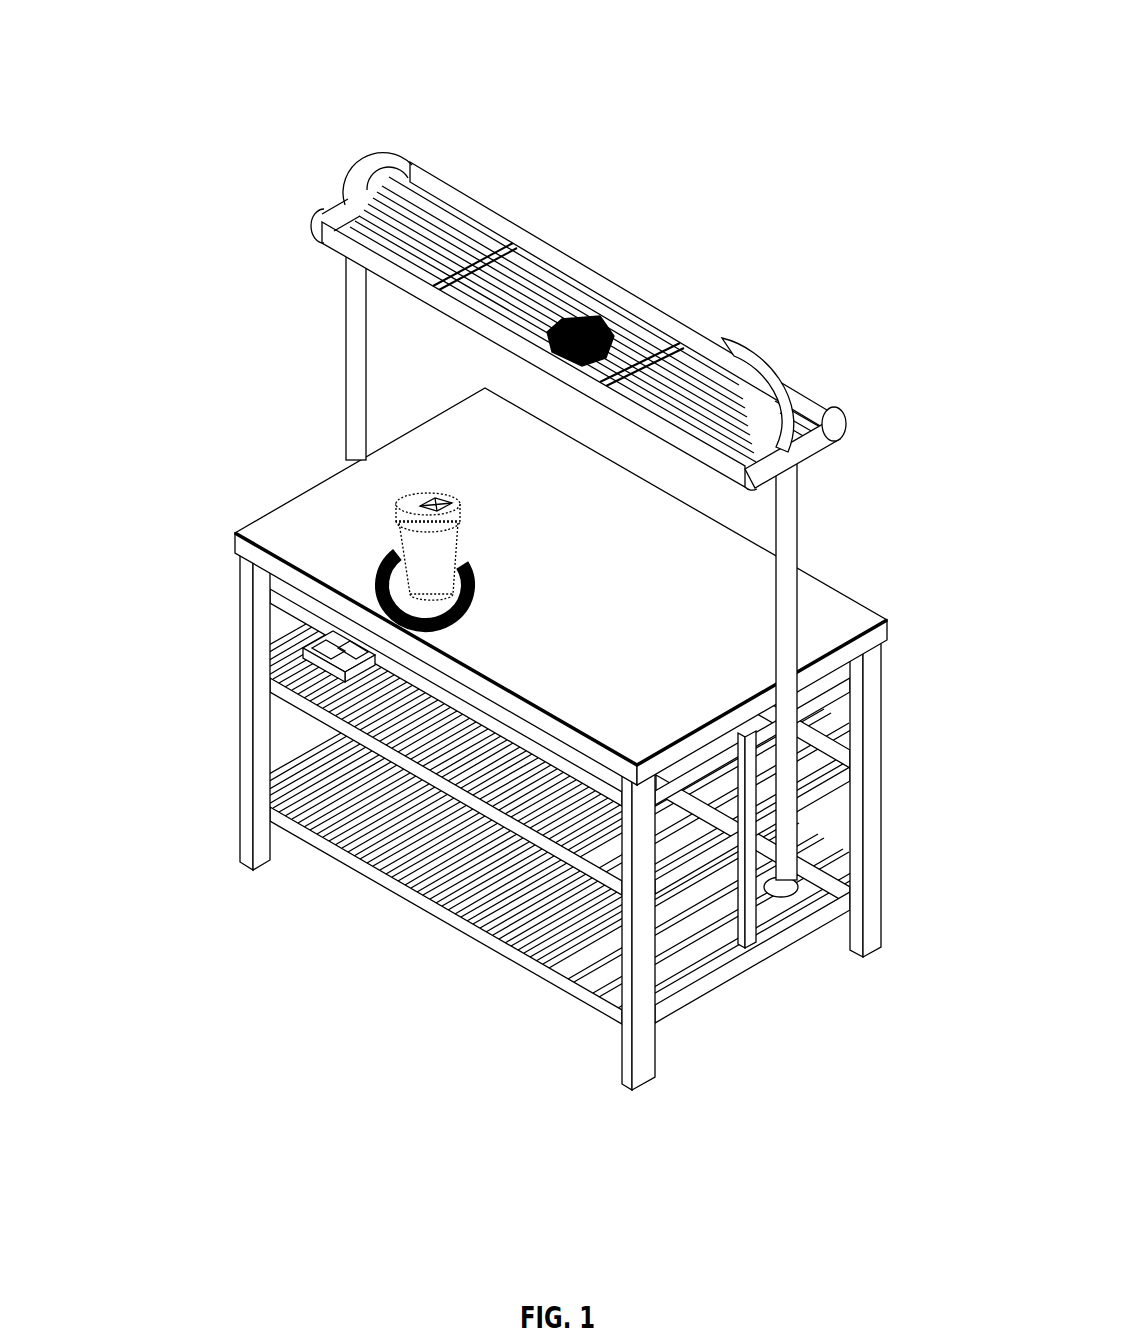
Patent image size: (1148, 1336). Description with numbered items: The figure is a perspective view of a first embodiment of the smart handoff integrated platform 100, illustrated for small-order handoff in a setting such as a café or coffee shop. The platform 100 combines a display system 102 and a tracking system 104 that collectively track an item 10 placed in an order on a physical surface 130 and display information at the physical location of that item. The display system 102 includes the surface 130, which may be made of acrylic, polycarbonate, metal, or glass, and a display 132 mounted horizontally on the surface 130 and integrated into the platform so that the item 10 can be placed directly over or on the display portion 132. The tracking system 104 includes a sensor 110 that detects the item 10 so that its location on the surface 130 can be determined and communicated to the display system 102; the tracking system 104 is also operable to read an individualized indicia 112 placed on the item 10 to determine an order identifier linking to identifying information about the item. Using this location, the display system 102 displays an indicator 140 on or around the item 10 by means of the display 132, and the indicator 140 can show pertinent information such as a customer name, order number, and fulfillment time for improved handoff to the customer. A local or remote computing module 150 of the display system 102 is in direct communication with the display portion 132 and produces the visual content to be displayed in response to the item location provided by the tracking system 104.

The smart handoff integrated platform 100 is at (501, 547).
The display system 102 is at (212, 660).
The tracking system 104 is at (529, 525).
The sensor 110 is at (588, 333).
The individualized indicia 112 is at (433, 507).
The surface 130 is at (518, 586).
The display 132 is at (710, 608).
The indicator 140 is at (468, 603).
The computing module 150 is at (310, 673).
The item 10 is at (475, 511).